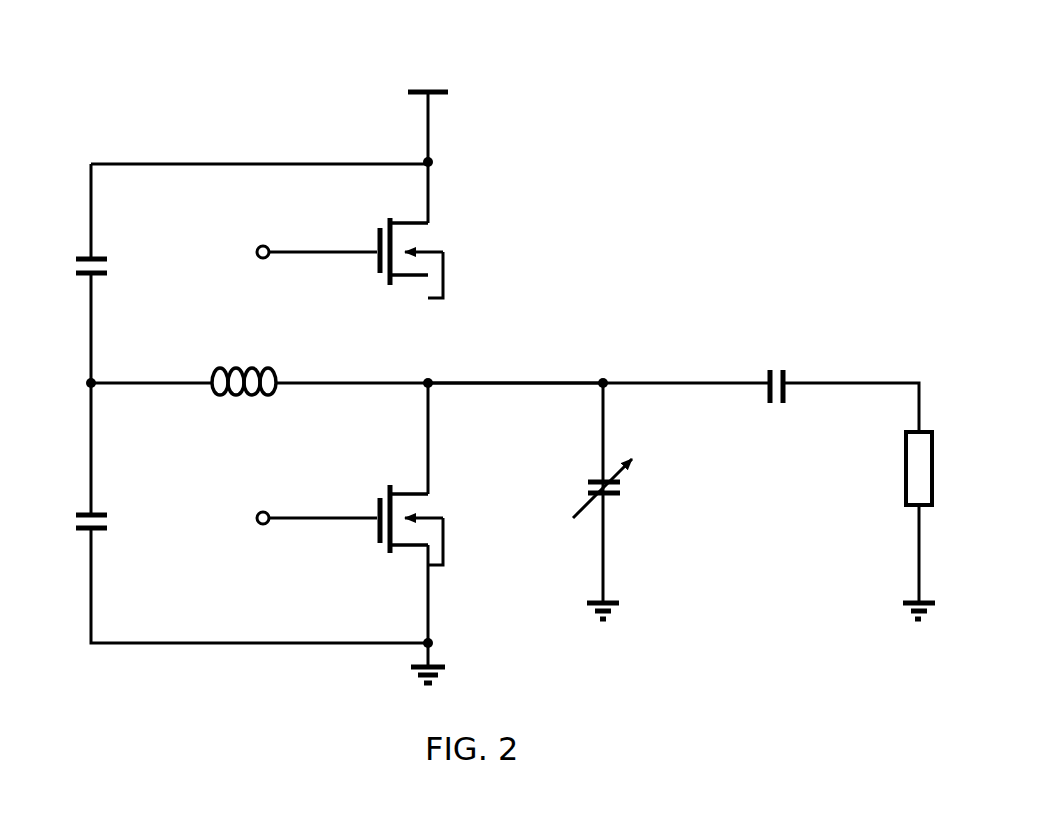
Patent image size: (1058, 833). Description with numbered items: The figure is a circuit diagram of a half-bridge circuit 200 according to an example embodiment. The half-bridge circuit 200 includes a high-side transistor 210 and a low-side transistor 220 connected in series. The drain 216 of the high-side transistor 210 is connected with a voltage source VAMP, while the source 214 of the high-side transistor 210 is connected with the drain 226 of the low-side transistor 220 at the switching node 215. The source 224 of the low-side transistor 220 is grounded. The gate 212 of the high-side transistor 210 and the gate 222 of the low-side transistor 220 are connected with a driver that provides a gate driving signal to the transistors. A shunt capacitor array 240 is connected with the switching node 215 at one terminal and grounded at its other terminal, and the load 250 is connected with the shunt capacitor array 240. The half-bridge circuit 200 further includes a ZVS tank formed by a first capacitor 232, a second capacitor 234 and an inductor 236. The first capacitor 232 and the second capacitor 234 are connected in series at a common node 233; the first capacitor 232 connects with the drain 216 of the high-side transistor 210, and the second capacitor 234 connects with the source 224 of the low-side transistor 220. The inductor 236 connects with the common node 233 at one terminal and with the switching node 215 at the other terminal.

The half-bridge circuit 200 is at (163, 44).
The high-side transistor 210 is at (472, 233).
The gate 212 is at (253, 243).
The source 214 is at (409, 290).
The switching node 215 is at (455, 366).
The drain 216 is at (408, 212).
The low-side transistor 220 is at (455, 503).
The gate 222 is at (254, 512).
The source 224 is at (409, 557).
The drain 226 is at (408, 480).
The first capacitor 232 is at (73, 238).
The common node 233 is at (81, 379).
The second capacitor 234 is at (78, 501).
The inductor 236 is at (194, 360).
The shunt capacitor array 240 is at (632, 520).
The load 250 is at (888, 474).